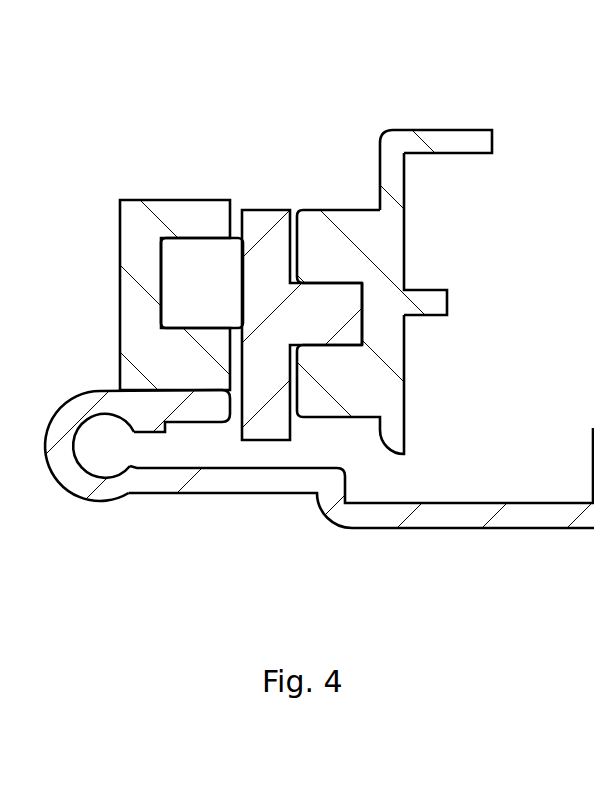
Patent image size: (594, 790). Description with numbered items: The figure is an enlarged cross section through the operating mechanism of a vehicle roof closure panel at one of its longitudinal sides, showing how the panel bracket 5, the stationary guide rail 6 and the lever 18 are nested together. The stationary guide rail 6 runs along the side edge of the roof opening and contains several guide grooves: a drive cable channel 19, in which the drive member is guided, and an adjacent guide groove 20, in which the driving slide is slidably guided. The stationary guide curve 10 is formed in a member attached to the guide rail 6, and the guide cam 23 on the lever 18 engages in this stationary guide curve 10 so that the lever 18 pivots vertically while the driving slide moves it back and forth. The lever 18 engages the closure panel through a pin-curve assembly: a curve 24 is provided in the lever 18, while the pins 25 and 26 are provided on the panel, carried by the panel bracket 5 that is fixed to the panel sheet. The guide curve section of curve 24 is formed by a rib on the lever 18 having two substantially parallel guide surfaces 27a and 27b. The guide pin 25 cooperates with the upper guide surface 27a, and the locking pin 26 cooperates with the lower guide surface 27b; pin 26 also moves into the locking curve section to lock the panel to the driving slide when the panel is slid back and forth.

The panel bracket 5 is at (463, 142).
The stationary guide rail 6 is at (167, 507).
The stationary guide curve 10 is at (175, 236).
The lever 18 is at (265, 227).
The drive cable channel 19 is at (95, 443).
The guide groove 20 is at (183, 443).
The guide cam 23 is at (188, 263).
The curve 24 is at (367, 296).
The pin 25 is at (352, 240).
The pin 26 is at (345, 387).
The upper guide surface 27a is at (322, 283).
The lower guide surface 27b is at (318, 345).